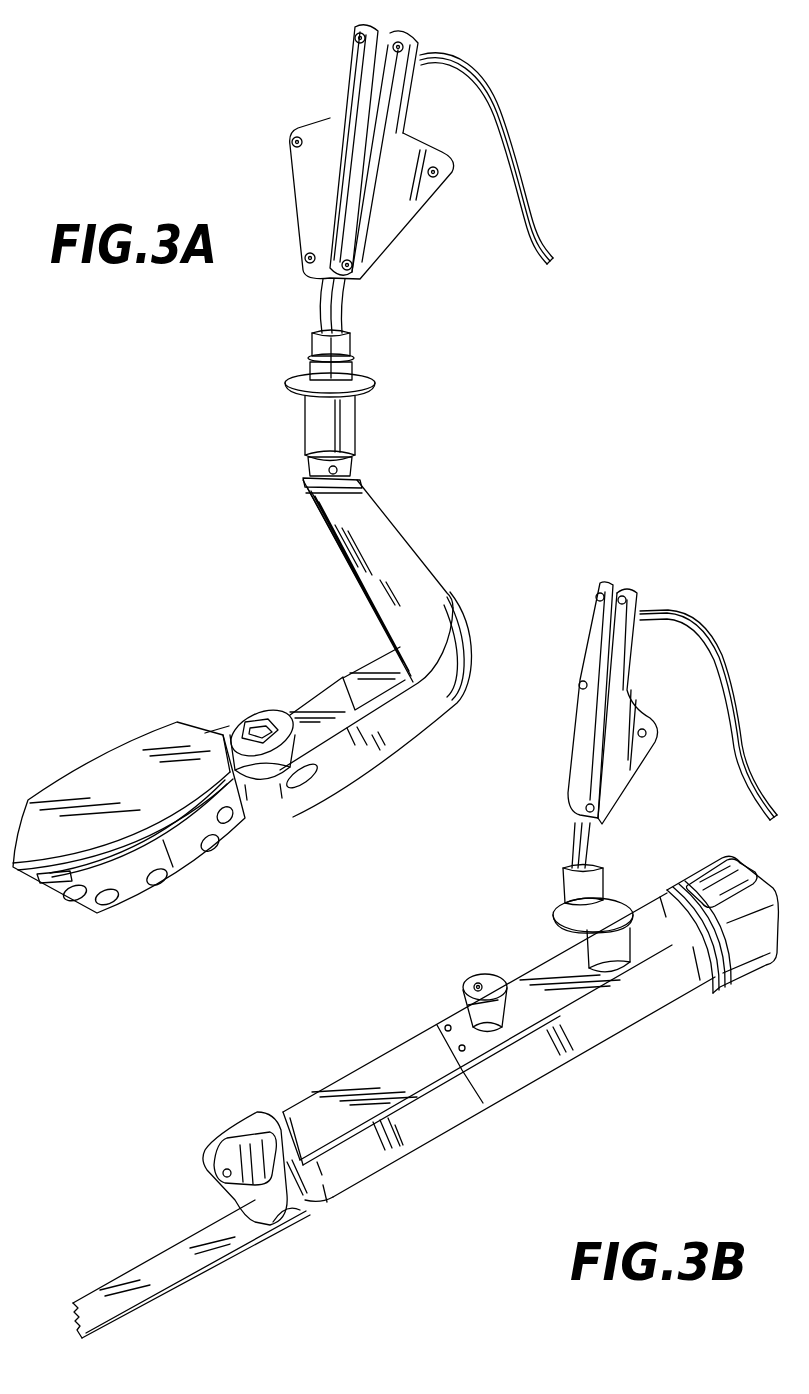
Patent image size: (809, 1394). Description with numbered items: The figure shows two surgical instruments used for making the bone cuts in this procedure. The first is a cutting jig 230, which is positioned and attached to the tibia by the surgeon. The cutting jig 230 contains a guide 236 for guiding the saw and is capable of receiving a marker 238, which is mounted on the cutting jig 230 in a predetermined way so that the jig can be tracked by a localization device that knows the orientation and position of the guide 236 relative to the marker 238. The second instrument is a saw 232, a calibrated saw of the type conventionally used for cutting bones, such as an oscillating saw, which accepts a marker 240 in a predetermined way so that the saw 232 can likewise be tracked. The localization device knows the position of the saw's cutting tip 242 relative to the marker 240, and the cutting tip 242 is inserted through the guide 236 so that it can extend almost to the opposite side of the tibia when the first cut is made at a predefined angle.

In FIG. 3A, the marker 238 is at (377, 217).
In FIG. 3A, the cutting jig 230 is at (323, 700).
In FIG. 3A, the guide 236 is at (120, 857).
In FIG. 3B, the marker 240 is at (613, 770).
In FIG. 3B, the saw 232 is at (452, 1113).
In FIG. 3B, the cutting tip 242 is at (73, 1303).